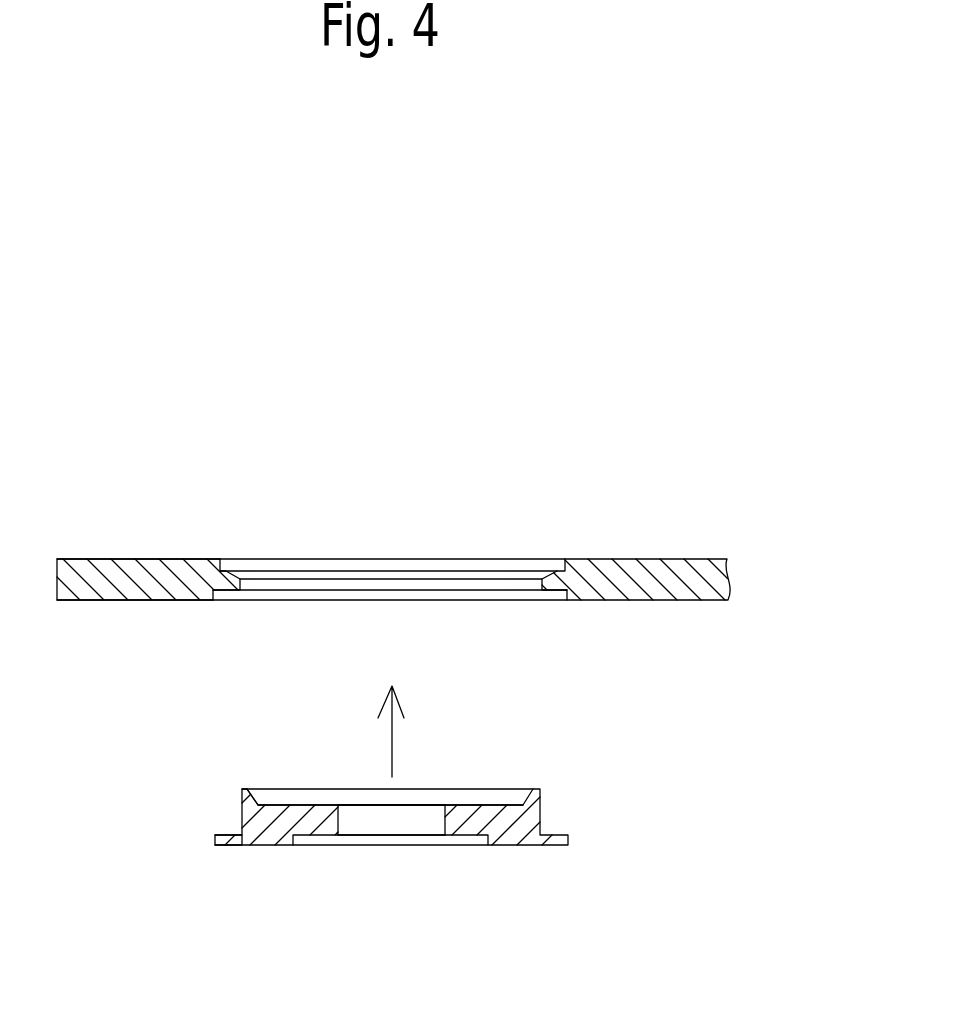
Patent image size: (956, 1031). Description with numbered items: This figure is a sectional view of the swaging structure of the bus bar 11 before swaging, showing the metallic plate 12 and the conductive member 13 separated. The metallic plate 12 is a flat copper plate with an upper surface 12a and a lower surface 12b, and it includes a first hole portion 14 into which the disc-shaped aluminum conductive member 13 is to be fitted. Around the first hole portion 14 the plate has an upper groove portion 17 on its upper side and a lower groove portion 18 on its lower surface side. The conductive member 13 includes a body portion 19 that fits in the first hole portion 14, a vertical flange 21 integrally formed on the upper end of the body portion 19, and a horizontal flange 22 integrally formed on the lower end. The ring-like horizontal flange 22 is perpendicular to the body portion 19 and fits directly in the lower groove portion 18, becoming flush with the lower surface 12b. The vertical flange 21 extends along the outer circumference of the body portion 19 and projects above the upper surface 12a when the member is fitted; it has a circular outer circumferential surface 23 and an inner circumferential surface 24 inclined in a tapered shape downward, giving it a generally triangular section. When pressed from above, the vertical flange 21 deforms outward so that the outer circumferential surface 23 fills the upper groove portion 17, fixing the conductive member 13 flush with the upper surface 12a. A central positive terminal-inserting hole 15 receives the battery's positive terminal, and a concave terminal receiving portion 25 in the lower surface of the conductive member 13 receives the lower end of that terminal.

The bus bar 11 is at (641, 479).
The metallic plate 12 is at (757, 618).
The upper surface 12a is at (96, 558).
The lower surface 12b is at (97, 600).
The conductive member 13 is at (567, 763).
The first hole portion 14 is at (508, 533).
The positive terminal-inserting hole 15 is at (421, 803).
The upper groove portion 17 is at (238, 558).
The lower groove portion 18 is at (226, 600).
The body portion 19 is at (241, 812).
The vertical flange 21 is at (253, 763).
The horizontal flange 22 is at (225, 838).
The outer circumferential surface 23 is at (218, 789).
The inner circumferential surface 24 is at (283, 789).
The terminal receiving portion 25 is at (323, 838).